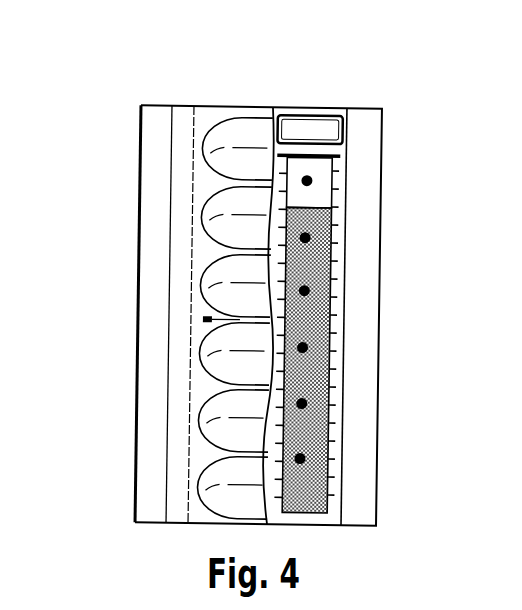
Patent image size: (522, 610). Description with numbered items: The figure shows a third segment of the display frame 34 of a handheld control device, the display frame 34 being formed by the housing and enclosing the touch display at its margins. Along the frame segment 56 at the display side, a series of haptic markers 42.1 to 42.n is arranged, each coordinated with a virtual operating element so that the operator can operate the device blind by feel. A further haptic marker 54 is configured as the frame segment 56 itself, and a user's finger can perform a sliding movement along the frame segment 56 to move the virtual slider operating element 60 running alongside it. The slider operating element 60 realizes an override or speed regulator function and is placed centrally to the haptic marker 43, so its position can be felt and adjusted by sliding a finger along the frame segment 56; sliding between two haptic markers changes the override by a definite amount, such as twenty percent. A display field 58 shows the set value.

The display frame 34 is at (160, 230).
The haptic marker 42.1 is at (218, 160).
The haptic marker 42.n is at (208, 502).
The haptic marker 43 is at (208, 321).
The haptic marker 54 is at (285, 311).
The frame segment 56 is at (282, 274).
The percentage value display 58 is at (304, 115).
The slider operating element 60 is at (318, 197).